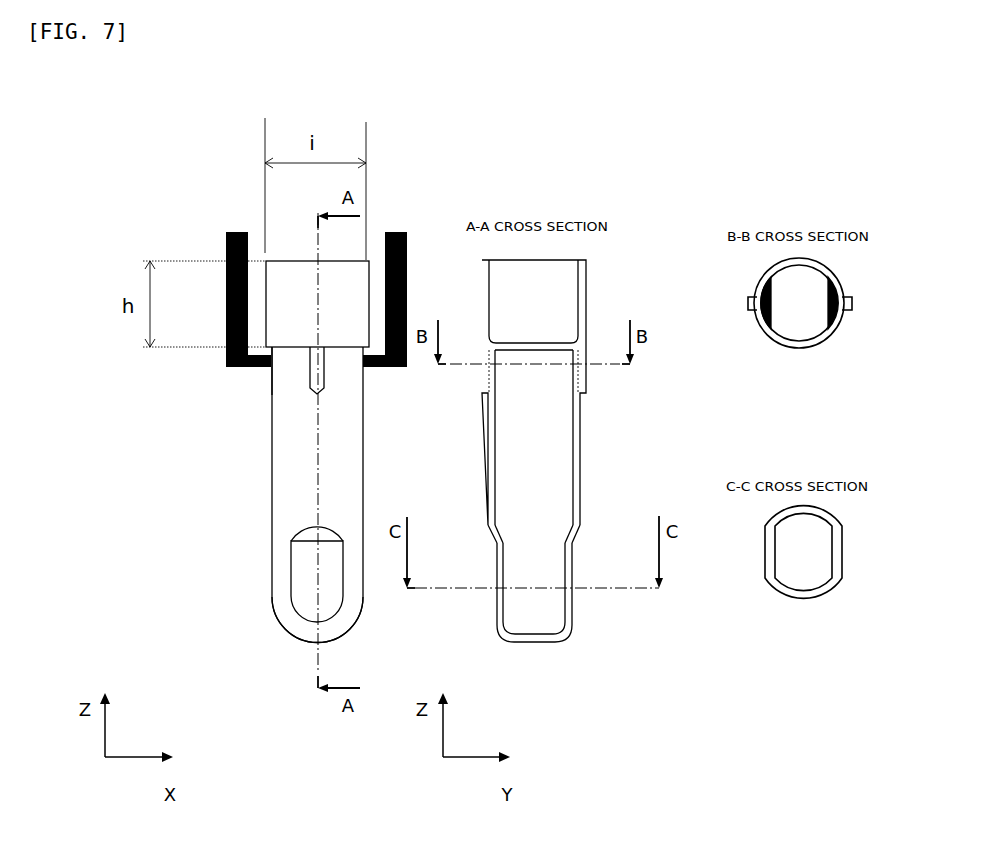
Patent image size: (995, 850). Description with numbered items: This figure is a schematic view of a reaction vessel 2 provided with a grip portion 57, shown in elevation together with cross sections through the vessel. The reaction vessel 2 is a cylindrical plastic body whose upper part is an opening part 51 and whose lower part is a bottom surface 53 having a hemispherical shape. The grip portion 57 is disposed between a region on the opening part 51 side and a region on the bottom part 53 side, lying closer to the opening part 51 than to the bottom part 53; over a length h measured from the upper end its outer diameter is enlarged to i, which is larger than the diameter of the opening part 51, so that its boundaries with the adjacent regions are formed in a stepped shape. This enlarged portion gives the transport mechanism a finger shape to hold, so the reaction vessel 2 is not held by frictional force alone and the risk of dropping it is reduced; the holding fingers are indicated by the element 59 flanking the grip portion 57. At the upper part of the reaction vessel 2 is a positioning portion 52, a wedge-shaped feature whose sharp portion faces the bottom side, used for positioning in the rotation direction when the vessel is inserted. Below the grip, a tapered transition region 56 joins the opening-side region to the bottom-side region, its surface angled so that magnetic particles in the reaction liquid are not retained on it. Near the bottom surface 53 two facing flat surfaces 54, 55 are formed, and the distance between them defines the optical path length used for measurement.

The reaction vessel 2 is at (285, 452).
The opening part 51 is at (343, 262).
The positioning portion 52 is at (324, 369).
The bottom surface 53 is at (287, 632).
The flat surface 54 is at (495, 603).
The flat surface 55 is at (571, 608).
The transition region 56 is at (498, 528).
The grip portion 57 is at (292, 349).
The holding member 59 is at (226, 315).